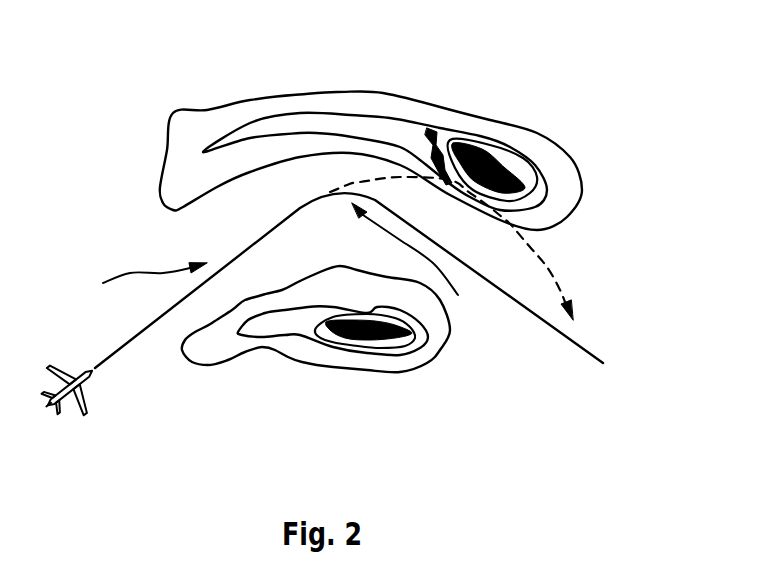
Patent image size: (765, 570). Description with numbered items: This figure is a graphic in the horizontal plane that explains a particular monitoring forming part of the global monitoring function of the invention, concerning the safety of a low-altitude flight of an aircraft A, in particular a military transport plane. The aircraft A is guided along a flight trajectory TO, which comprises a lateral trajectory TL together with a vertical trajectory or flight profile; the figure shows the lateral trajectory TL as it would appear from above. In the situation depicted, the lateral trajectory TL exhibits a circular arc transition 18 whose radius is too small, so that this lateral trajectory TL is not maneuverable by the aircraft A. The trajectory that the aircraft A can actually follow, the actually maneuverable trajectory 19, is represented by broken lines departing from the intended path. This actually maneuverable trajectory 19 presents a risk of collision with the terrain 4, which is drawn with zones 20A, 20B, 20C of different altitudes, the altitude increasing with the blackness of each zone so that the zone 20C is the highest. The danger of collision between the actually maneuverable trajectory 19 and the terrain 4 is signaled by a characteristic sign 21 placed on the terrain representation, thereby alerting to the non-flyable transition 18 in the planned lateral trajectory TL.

The terrain 4 is at (375, 249).
The terrain altitude zone 20A is at (200, 125).
The terrain altitude zone 20B is at (290, 123).
The terrain altitude zone 20C is at (503, 167).
The characteristic sign 21 is at (437, 128).
The circular arc transition 18 is at (418, 263).
The actually maneuverable trajectory 19 is at (557, 273).
The lateral trajectory TL is at (245, 252).
The flight trajectory TO is at (138, 281).
The aircraft A is at (72, 393).